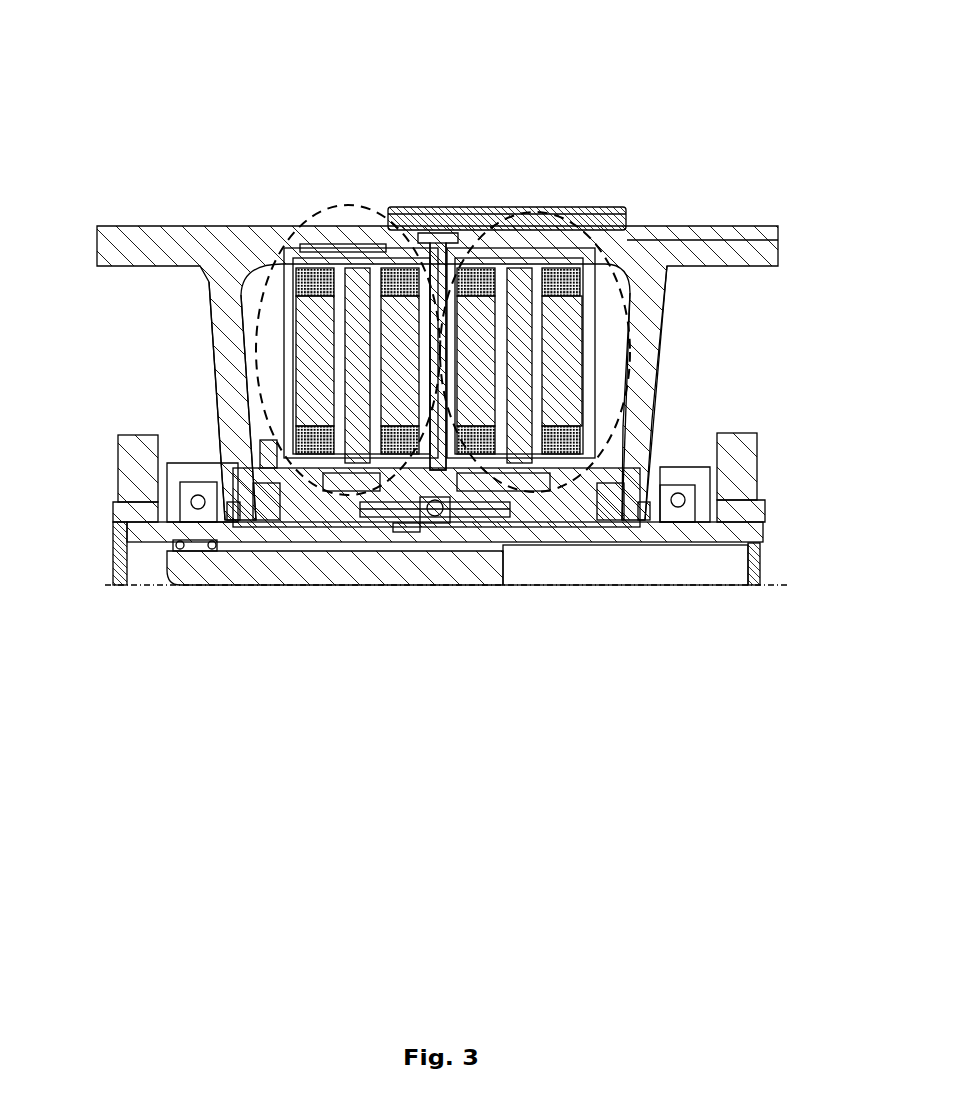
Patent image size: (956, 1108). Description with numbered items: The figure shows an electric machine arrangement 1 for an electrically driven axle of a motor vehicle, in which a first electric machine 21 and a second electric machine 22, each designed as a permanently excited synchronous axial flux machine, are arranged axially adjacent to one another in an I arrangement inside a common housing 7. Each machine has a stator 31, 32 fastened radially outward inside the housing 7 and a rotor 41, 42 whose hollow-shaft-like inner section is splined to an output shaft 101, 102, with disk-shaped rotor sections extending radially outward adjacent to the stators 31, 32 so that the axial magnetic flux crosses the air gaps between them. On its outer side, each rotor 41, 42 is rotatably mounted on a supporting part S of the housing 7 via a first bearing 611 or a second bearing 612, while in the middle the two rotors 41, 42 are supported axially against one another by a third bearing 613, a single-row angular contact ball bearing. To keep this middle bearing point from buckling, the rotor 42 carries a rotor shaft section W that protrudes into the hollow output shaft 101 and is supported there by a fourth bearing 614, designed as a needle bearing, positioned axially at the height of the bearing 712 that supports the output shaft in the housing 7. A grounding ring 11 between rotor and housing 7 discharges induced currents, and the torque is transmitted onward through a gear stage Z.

The electric machine arrangement 1 is at (473, 112).
The housing 7 is at (150, 226).
The supporting part S is at (217, 335).
The grounding ring 11 is at (262, 472).
The first electric machine 21 is at (300, 245).
The second electric machine 22 is at (556, 222).
The stator 31 is at (326, 272).
The stator 32 is at (488, 272).
The rotor 41 is at (357, 270).
The rotor 42 is at (524, 270).
The first bearing 611 is at (262, 493).
The second bearing 612 is at (608, 492).
The third bearing 613 is at (428, 520).
The fourth bearing 614 is at (194, 548).
The bearing 712 is at (132, 478).
The gear stage Z is at (747, 488).
The rotor shaft section W is at (240, 563).
The output shaft 101 is at (120, 578).
The output shaft 102 is at (632, 530).